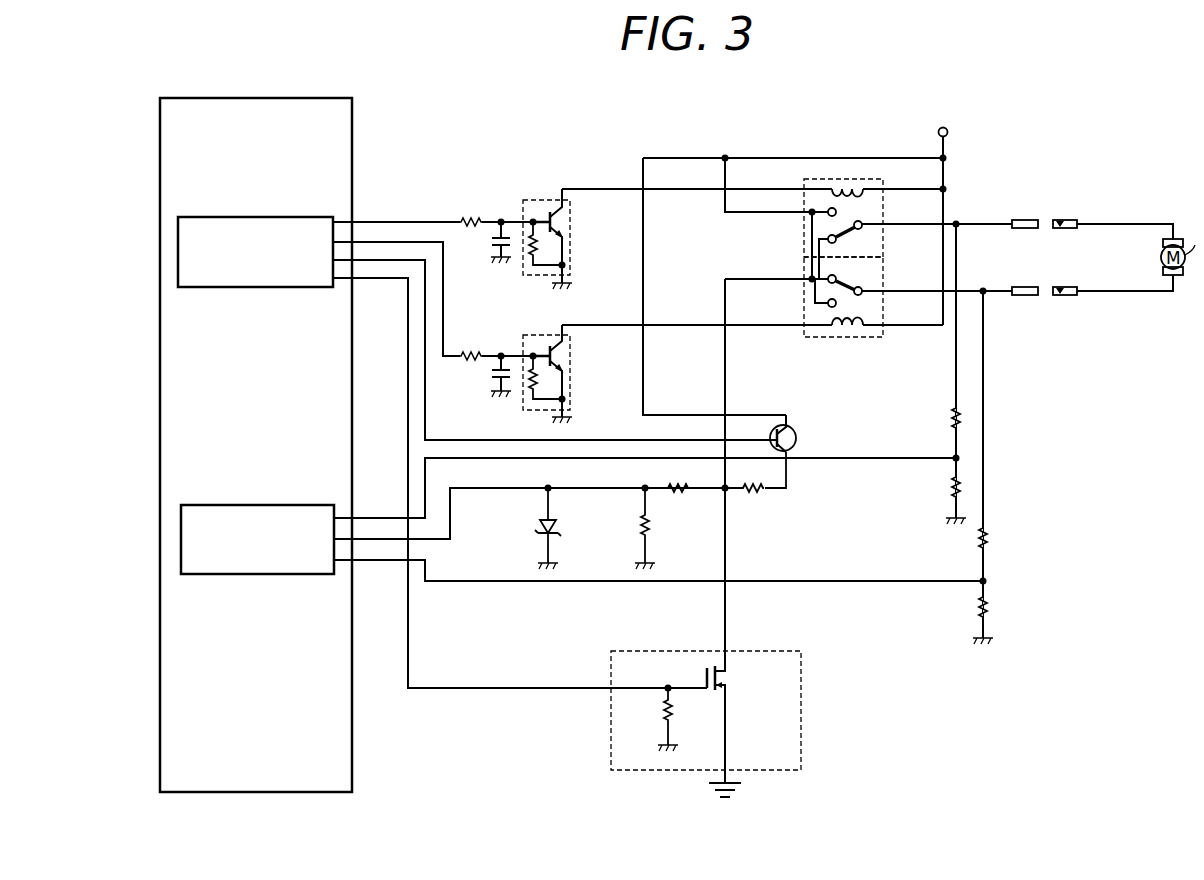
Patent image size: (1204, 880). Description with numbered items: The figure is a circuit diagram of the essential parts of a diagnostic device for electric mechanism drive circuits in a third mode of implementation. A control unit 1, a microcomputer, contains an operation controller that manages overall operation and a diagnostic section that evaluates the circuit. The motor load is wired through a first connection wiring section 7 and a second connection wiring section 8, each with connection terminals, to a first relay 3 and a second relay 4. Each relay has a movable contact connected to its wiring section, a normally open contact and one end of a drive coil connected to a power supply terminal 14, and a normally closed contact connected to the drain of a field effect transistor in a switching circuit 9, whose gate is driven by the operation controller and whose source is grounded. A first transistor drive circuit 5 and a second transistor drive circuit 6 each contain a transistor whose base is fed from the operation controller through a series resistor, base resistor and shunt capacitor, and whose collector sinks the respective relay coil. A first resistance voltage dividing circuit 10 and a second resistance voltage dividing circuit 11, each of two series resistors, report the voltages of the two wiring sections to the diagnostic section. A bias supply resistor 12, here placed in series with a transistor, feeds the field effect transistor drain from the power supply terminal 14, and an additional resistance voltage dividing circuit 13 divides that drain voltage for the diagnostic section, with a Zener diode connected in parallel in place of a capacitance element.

The control unit 1 is at (352, 137).
The first relay 3 is at (882, 197).
The second relay 4 is at (882, 323).
The first transistor drive circuit 5 is at (574, 239).
The second transistor drive circuit 6 is at (575, 374).
The first connection wiring section 7 is at (1071, 227).
The second connection wiring section 8 is at (1083, 308).
The switching circuit 9 is at (724, 717).
The first resistance voltage dividing circuit 10 is at (968, 374).
The second resistance voltage dividing circuit 11 is at (1026, 467).
The bias supply resistor 12 is at (795, 468).
The additional resistance voltage dividing circuit 13 is at (595, 518).
The power supply terminal 14 is at (948, 129).